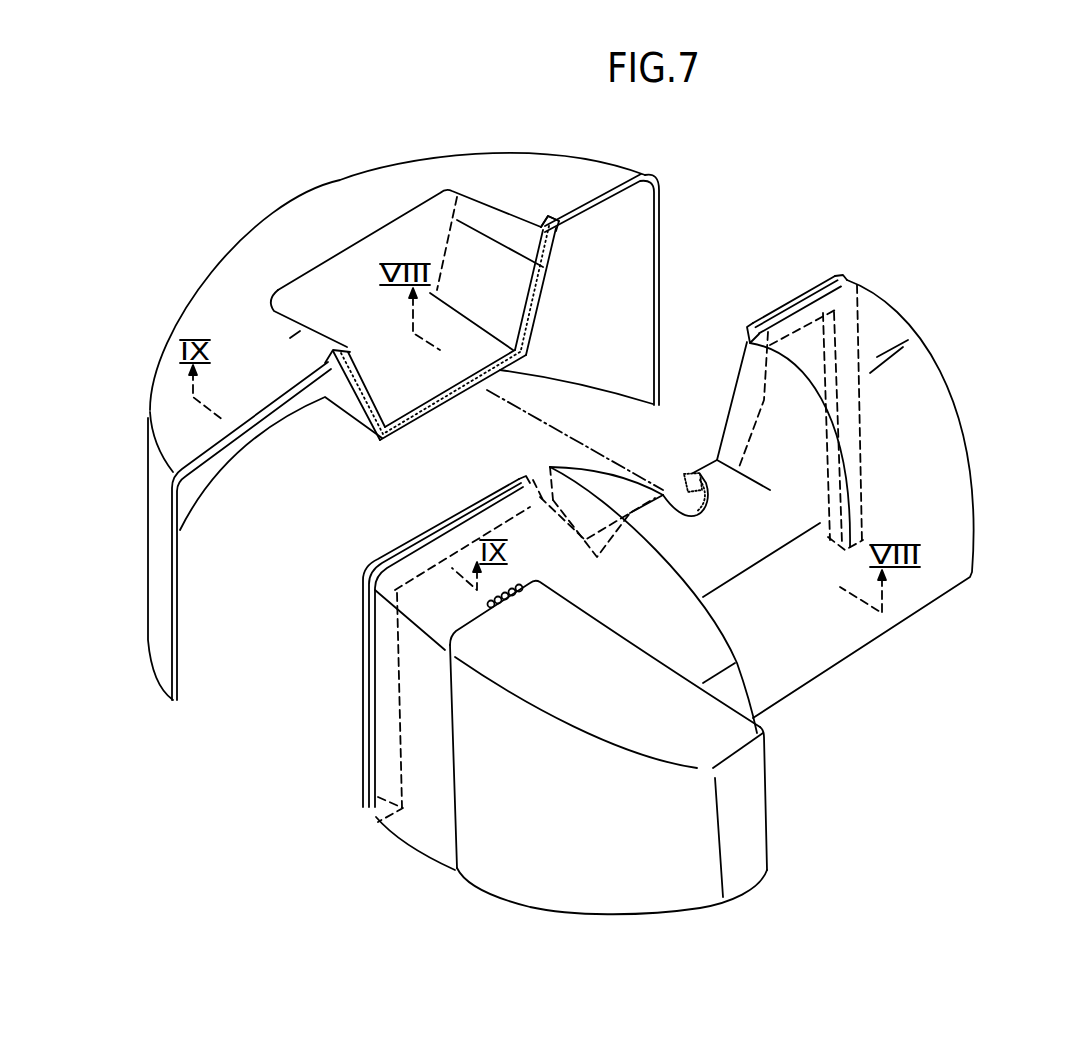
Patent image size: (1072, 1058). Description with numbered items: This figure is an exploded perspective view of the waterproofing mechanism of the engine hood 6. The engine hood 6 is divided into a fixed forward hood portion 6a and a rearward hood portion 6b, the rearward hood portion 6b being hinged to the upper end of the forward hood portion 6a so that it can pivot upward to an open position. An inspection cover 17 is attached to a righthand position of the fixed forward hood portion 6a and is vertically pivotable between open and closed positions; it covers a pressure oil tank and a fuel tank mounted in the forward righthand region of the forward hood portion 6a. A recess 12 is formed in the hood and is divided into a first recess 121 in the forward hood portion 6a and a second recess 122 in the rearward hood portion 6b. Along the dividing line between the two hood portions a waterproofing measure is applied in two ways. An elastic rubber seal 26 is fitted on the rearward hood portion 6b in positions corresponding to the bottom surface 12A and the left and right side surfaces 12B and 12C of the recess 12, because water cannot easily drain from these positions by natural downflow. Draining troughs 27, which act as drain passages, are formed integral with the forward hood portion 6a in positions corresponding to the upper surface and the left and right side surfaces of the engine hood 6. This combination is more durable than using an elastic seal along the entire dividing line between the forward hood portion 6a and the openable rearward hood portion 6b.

The engine hood 6 is at (863, 193).
The forward hood portion 6a is at (937, 417).
The rearward hood portion 6b is at (207, 280).
The recess 12 is at (530, 378).
The bottom surface 12A is at (393, 392).
The side surface 12B is at (493, 220).
The side surface 12C is at (303, 328).
The first recess 121 is at (776, 507).
The second recess 122 is at (470, 340).
The inspection cover 17 is at (757, 817).
The elastic rubber seal 26 is at (460, 391).
The draining troughs 27 is at (794, 298).